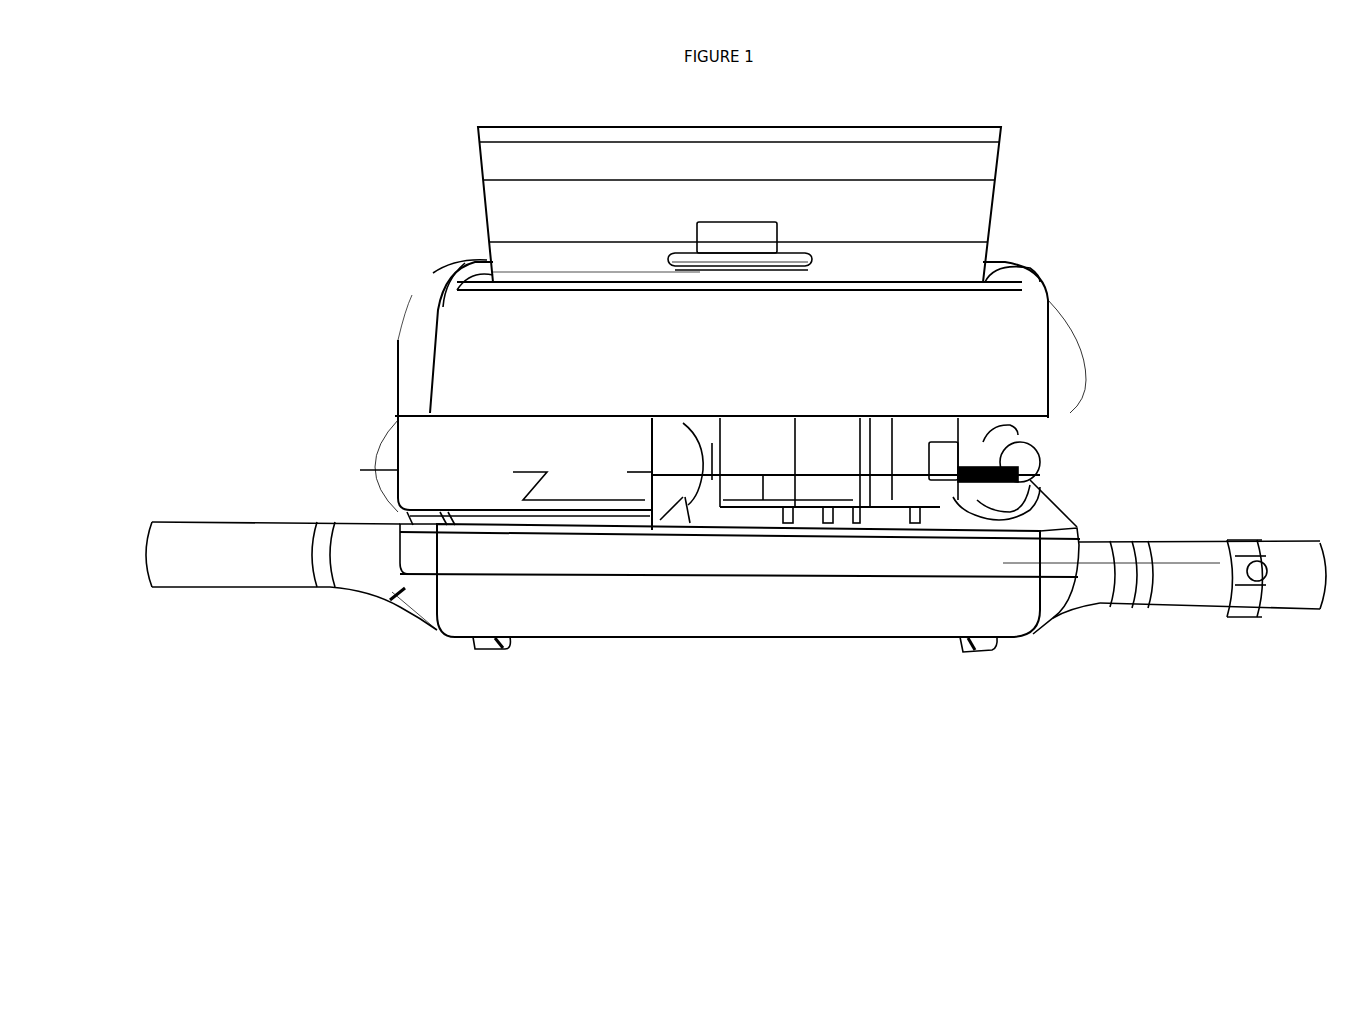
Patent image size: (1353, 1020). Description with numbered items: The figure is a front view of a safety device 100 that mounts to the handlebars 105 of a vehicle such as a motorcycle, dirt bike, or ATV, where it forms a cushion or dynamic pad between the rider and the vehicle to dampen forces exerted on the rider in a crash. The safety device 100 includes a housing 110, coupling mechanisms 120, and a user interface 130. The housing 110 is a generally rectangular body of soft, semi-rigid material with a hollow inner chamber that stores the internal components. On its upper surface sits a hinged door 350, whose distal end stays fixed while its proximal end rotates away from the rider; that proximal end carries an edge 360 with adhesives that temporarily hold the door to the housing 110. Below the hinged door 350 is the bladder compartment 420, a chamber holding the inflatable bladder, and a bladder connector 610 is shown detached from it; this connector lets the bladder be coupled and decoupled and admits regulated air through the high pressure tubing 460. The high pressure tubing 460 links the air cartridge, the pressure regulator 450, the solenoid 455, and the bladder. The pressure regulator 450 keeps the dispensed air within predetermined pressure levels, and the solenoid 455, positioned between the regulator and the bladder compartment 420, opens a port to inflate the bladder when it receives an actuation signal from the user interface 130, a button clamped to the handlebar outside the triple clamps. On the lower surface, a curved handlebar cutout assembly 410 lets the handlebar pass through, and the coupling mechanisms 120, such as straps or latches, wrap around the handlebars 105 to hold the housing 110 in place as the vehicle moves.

The safety device 100 is at (115, 124).
The handlebars 105 is at (222, 553).
The housing 110 is at (1005, 352).
The coupling mechanisms 120 is at (480, 650).
The user interface 130 is at (1260, 550).
The hinged door 350 is at (777, 175).
The edge 360 is at (830, 127).
The handlebar cutout assembly 410 is at (610, 637).
The bladder compartment 420 is at (480, 280).
The pressure regulator 450 is at (833, 477).
The solenoid 455 is at (437, 453).
The high pressure tubing 460 is at (990, 468).
The bladder connector 610 is at (725, 243).